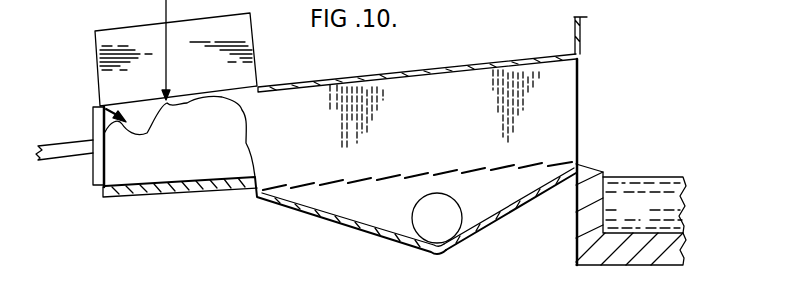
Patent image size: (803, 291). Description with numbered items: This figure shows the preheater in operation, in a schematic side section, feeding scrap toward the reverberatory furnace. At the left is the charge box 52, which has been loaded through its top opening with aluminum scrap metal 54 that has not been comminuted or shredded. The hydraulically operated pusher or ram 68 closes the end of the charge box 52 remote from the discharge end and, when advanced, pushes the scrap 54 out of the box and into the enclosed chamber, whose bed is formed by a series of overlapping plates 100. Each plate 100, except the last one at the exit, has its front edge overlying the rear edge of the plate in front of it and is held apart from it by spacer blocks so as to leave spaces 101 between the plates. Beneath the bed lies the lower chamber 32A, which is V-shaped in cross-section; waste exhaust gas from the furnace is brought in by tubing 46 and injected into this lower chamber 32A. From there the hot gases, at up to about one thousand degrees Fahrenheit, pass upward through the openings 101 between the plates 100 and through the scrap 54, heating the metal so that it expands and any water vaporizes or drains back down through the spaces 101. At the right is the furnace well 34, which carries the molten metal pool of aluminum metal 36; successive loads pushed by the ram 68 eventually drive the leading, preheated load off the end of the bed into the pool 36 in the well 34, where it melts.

The charge box 52 is at (97, 108).
The aluminum scrap metal 54 is at (191, 154).
The pusher or ram 68 is at (96, 170).
The plate 100 is at (357, 188).
The lower chamber 32A is at (510, 209).
The spaces 101 is at (420, 192).
The tubing 46 is at (449, 231).
The well 34 is at (586, 230).
The molten metal pool of aluminum metal 36 is at (648, 223).